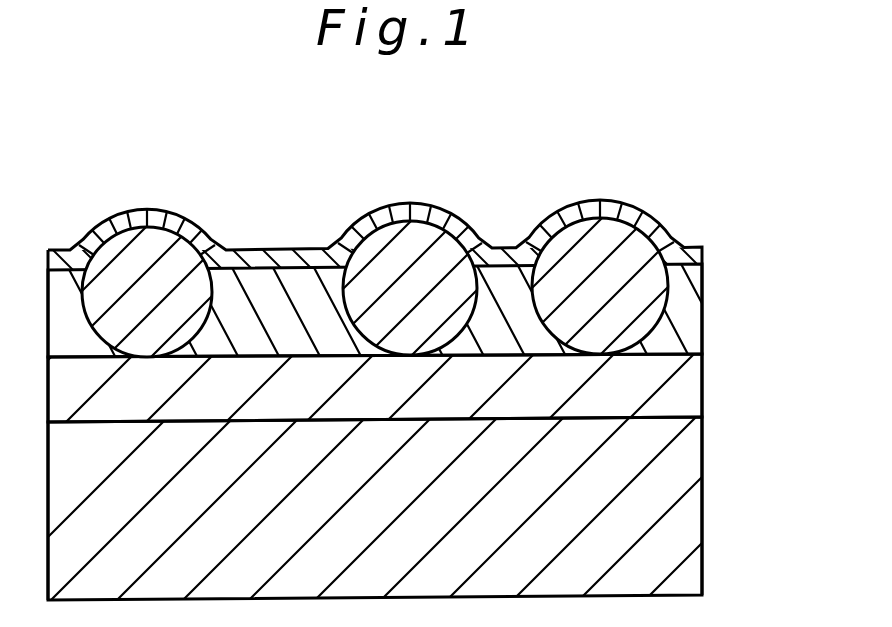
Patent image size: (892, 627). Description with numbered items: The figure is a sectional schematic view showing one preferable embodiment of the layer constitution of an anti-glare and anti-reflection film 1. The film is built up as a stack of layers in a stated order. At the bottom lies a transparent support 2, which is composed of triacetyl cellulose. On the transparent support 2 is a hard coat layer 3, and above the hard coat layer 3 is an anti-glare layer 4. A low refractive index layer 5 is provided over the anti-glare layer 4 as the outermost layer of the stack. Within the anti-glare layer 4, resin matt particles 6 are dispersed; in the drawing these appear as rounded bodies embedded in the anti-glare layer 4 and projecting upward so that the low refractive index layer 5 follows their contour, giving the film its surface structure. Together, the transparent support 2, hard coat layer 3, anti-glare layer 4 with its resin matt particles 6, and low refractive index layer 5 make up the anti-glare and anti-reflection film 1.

The anti-glare and anti-reflection film 1 is at (80, 196).
The transparent support 2 is at (702, 507).
The hard coat layer 3 is at (702, 388).
The anti-glare layer 4 is at (702, 306).
The low refractive index layer 5 is at (670, 238).
The resin matt particles 6 is at (418, 272).